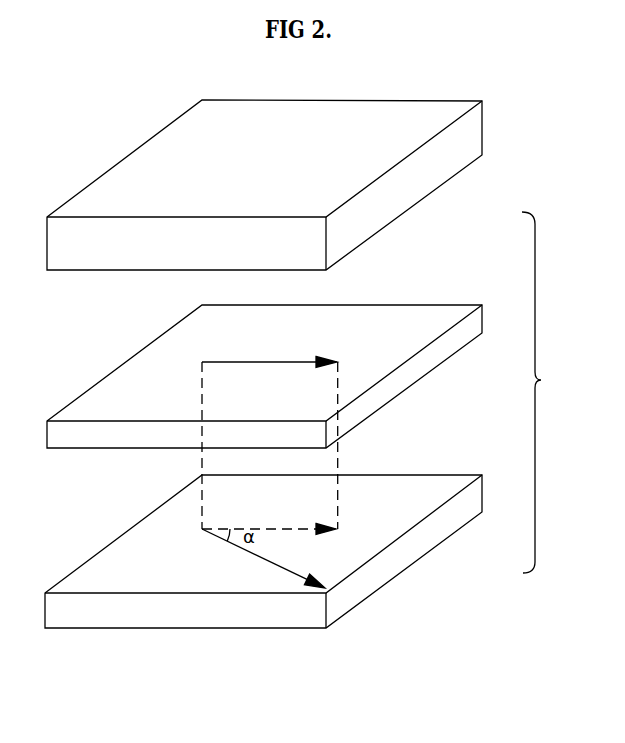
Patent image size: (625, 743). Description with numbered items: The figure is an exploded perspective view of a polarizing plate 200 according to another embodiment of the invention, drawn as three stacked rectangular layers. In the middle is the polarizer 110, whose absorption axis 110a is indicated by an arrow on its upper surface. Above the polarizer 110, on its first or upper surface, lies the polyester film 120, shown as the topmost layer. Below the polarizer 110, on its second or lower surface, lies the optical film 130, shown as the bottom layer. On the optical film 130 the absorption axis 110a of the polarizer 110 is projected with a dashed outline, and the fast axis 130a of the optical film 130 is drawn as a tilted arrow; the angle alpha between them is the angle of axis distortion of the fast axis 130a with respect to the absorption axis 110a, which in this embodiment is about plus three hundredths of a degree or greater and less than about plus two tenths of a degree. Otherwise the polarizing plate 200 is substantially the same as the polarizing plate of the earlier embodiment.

The polyester film 120 is at (440, 159).
The polarizer 110 is at (413, 340).
The optical film 130 is at (412, 513).
The absorption axis 110a is at (232, 360).
The fast axis 130a is at (253, 552).
The polarizing plate 200 is at (549, 392).